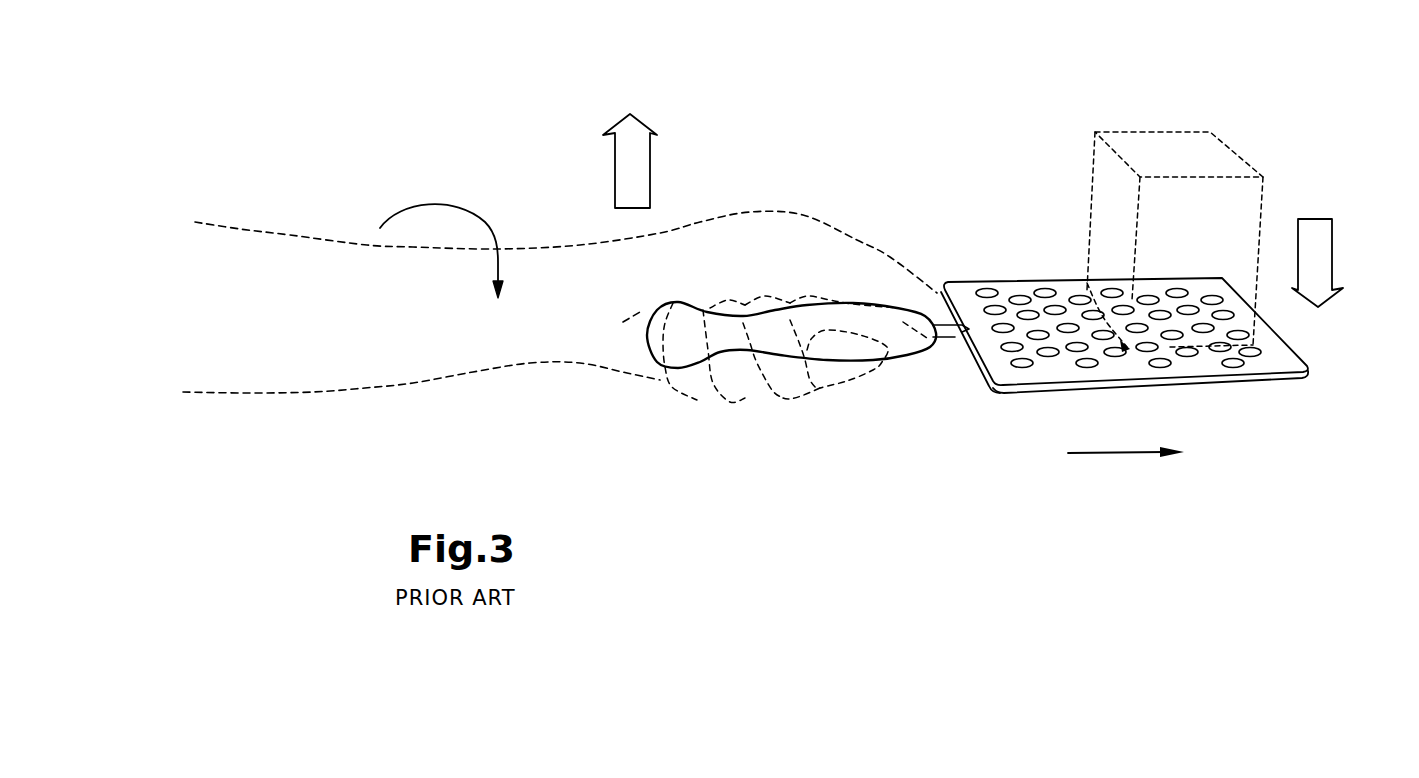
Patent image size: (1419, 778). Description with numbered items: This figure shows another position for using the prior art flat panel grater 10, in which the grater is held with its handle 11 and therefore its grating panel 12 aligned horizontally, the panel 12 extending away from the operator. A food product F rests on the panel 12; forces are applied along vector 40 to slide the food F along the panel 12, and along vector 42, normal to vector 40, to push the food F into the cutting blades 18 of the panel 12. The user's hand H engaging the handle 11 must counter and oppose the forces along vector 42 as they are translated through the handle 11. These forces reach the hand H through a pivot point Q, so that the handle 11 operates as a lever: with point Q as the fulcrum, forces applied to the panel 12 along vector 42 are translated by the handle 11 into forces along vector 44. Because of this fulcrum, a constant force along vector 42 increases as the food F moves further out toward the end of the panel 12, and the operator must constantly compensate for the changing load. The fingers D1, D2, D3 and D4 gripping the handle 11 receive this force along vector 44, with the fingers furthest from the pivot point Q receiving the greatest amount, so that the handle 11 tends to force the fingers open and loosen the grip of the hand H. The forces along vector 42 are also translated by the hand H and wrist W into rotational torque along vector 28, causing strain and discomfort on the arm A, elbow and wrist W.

The flat panel grater 10 is at (1305, 385).
The handle 11 is at (661, 333).
The grating panel 12 is at (995, 388).
The cutting blade 18 is at (1070, 373).
The rotational torque force vector 28 is at (455, 206).
The sliding force vector 40 is at (1122, 455).
The normal force vector 42 is at (1318, 270).
The lever force vector 44 is at (623, 168).
The forearm A is at (282, 290).
The wrist W is at (613, 277).
The hand H is at (775, 253).
The pivot point Q is at (947, 307).
The food product F is at (1167, 203).
The top finger D1 is at (847, 378).
The second finger D2 is at (790, 382).
The third finger D3 is at (745, 393).
The bottom finger D4 is at (700, 393).